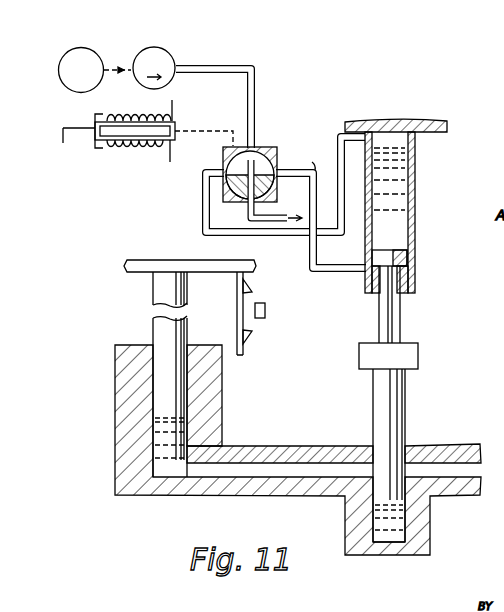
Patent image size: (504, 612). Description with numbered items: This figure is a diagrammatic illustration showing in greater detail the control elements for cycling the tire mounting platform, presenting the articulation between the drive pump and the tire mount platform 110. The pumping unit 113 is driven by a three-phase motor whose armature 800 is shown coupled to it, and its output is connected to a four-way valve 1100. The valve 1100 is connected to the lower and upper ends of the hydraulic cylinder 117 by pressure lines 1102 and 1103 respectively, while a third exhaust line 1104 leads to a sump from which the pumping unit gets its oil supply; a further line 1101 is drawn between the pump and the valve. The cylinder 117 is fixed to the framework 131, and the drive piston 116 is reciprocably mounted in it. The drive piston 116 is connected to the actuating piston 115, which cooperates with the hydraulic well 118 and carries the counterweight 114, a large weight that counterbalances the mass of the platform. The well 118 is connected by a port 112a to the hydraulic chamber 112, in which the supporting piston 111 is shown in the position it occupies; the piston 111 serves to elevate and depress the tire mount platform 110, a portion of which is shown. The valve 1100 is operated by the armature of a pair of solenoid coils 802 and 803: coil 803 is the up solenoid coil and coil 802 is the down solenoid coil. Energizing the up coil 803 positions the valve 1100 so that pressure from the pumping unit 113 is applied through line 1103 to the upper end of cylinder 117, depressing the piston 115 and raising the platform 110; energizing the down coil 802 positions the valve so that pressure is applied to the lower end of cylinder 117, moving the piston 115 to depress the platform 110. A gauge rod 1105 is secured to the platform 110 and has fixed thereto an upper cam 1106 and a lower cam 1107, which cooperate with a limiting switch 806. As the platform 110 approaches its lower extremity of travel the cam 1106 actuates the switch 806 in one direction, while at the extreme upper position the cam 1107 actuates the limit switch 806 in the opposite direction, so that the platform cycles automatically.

The armature 800 is at (97, 47).
The pumping unit 113 is at (170, 50).
The pressure conduit 1101 is at (244, 64).
The down solenoid coil 802 is at (126, 114).
The up solenoid coil 803 is at (118, 148).
The four-way valve 1100 is at (268, 146).
The pressure line 1103 is at (338, 146).
The pressure line 1102 is at (316, 250).
The exhaust line 1104 is at (268, 205).
The framework 131 is at (447, 126).
The hydraulic cylinder 117 is at (400, 186).
The drive piston 116 is at (401, 310).
The counterweight 114 is at (419, 356).
The actuating piston 115 is at (406, 410).
The hydraulic well 118 is at (395, 533).
The hydraulic chamber 112 is at (153, 461).
The port 112a is at (247, 468).
The tire mount platform 110 is at (126, 272).
The piston 111 is at (152, 331).
The gauge rod 1105 is at (236, 306).
The upper cam 1106 is at (250, 290).
The lower cam 1107 is at (250, 340).
The limit switch 806 is at (266, 310).